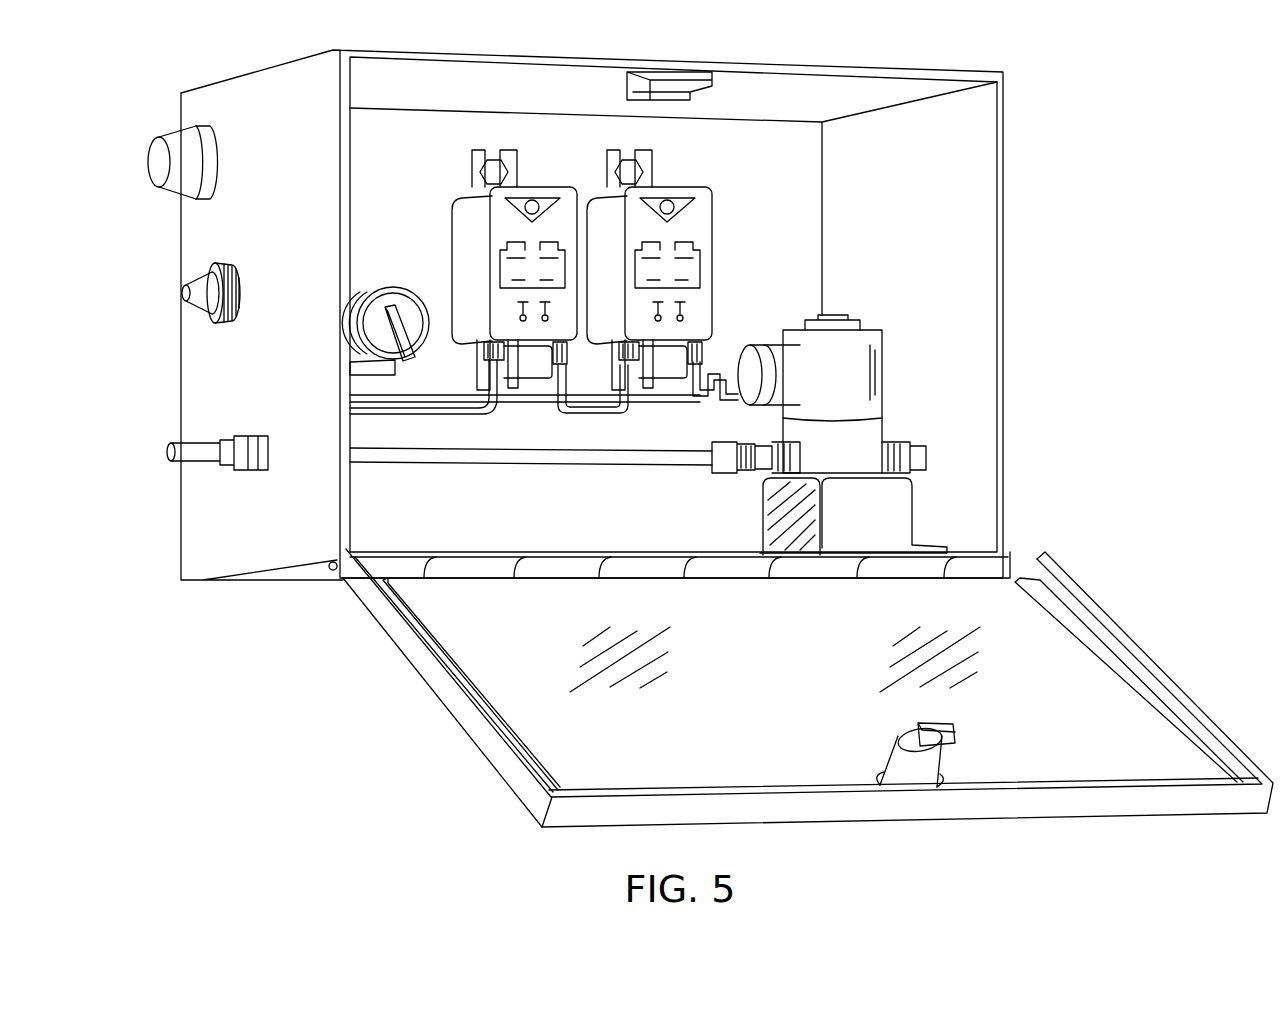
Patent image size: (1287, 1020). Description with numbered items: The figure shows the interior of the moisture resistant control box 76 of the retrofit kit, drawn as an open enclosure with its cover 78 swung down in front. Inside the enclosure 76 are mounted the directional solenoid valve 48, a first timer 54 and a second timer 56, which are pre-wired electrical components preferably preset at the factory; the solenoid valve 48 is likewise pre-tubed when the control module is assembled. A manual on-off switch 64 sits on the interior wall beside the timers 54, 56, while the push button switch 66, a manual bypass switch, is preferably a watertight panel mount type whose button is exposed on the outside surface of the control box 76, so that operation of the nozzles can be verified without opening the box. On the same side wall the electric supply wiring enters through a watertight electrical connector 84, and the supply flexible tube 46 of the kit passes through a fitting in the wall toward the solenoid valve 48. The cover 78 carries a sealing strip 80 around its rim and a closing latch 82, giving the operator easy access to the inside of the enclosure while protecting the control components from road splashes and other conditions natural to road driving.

The supply flexible tube 46 is at (175, 463).
The directional solenoid valve 48 is at (882, 365).
The first timer 54 is at (453, 210).
The second timer 56 is at (710, 213).
The manual on-off switch 64 is at (372, 293).
The push button switch 66 is at (158, 140).
The control box 76 is at (1008, 230).
The cover 78 is at (1190, 690).
The sealing strip 80 is at (1098, 653).
The closing latch 82 is at (927, 768).
The watertight electrical connector 84 is at (185, 293).